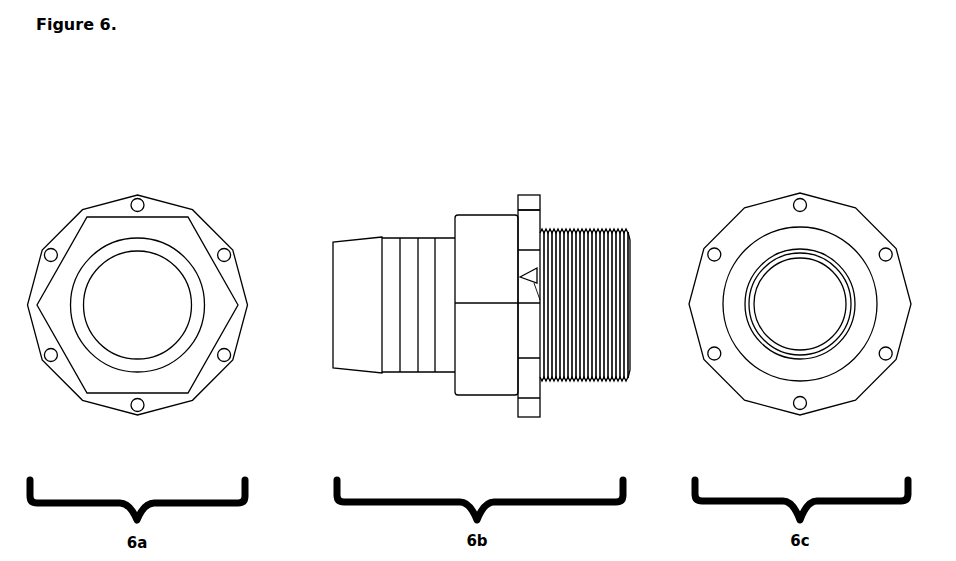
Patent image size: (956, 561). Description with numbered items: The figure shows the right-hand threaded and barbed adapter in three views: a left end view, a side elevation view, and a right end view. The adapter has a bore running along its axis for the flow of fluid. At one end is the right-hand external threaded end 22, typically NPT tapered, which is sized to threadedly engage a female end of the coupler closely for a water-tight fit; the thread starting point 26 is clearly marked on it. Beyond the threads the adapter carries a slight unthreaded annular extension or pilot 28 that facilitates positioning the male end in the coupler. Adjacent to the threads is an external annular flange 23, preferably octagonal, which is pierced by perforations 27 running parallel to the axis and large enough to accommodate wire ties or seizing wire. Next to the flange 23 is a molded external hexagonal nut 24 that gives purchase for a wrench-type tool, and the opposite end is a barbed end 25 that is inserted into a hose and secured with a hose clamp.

In FIG. 6B, the right-hand external threaded end 22 is at (580, 230).
In FIG. 6C, the right-hand external threaded end 22 is at (762, 235).
In FIG. 6A, the external annular flange 23 is at (217, 240).
In FIG. 6B, the external annular flange 23 is at (528, 195).
In FIG. 6C, the external annular flange 23 is at (855, 211).
In FIG. 6A, the external hexagonal nut 24 is at (193, 220).
In FIG. 6B, the external hexagonal nut 24 is at (486, 284).
In FIG. 6A, the barbed end 25 is at (207, 278).
In FIG. 6B, the barbed end 25 is at (405, 237).
In FIG. 6B, the thread starting point 26 is at (573, 380).
In FIG. 6A, the perforations 27 is at (150, 198).
In FIG. 6B, the perforations 27 is at (542, 208).
In FIG. 6C, the perforations 27 is at (795, 203).
In FIG. 6B, the pilot 28 is at (630, 243).
In FIG. 6C, the pilot 28 is at (762, 260).